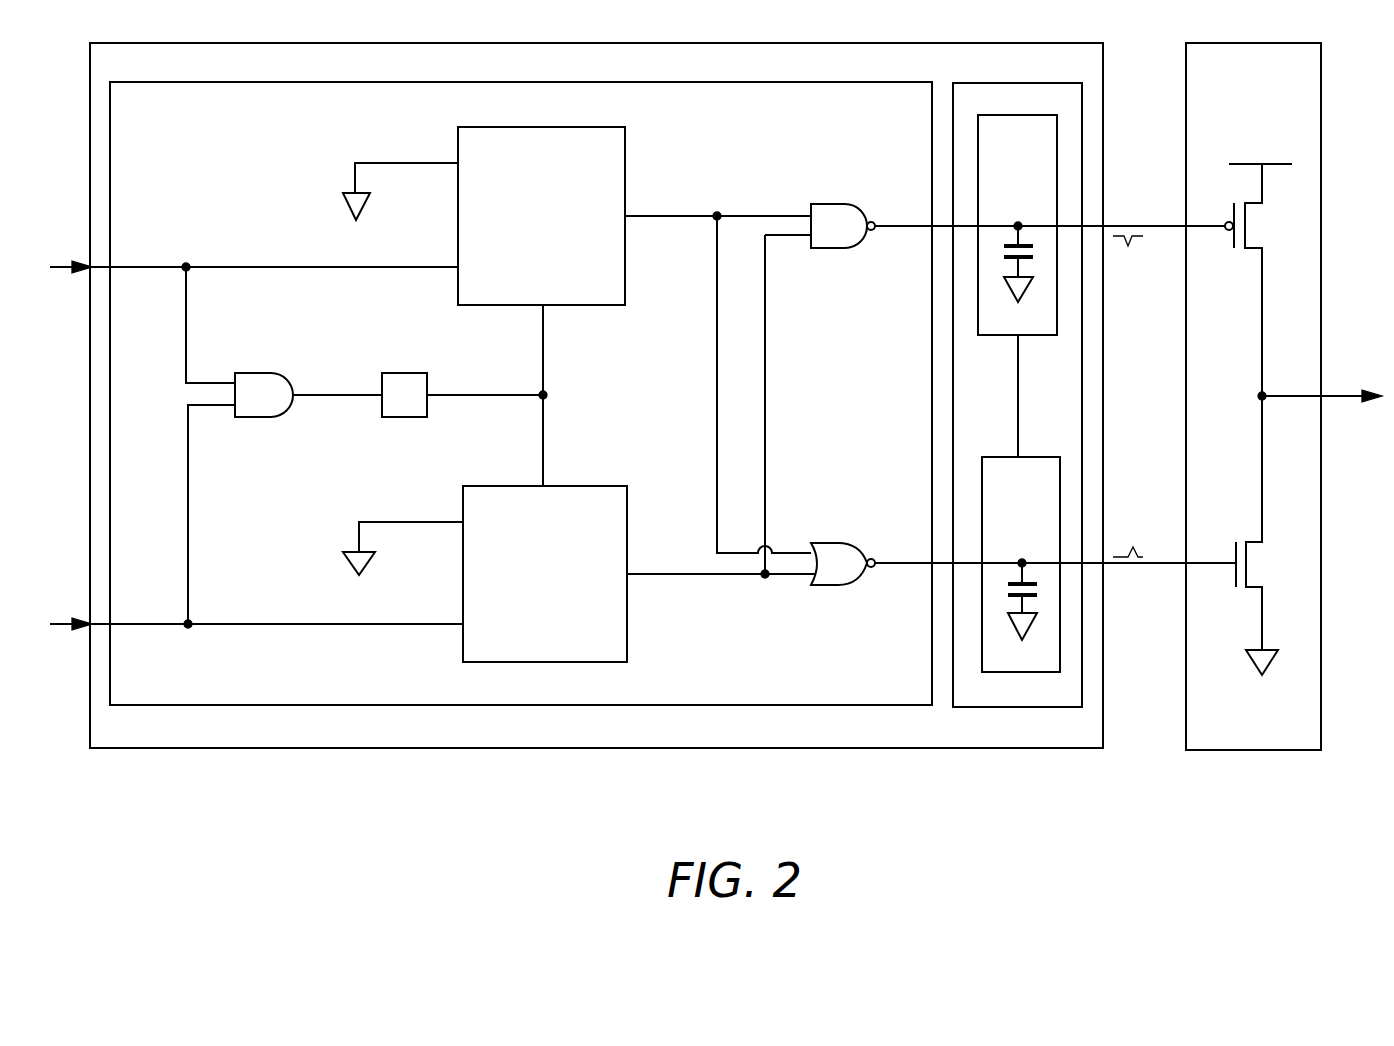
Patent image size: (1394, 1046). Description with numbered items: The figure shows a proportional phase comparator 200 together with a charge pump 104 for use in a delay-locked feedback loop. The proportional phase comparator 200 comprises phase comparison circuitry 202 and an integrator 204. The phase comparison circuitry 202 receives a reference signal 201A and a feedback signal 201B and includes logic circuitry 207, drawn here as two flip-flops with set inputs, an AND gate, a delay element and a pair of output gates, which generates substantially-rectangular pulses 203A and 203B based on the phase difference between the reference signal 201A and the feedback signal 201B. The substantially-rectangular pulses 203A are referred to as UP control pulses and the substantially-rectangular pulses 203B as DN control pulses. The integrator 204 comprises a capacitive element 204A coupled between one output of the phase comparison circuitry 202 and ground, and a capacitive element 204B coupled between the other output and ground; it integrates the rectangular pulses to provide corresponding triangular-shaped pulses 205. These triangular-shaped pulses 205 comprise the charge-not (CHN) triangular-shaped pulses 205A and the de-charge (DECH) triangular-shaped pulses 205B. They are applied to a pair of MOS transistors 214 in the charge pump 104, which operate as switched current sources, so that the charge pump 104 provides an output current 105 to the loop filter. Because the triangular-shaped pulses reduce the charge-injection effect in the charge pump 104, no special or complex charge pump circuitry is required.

The proportional phase comparator 200 is at (400, 750).
The phase comparison circuitry 202 is at (893, 708).
The logic circuitry 207 is at (225, 700).
The reference signal 201A is at (60, 272).
The feedback signal 201B is at (62, 628).
The substantially-rectangular pulses 203A is at (903, 230).
The substantially-rectangular pulses 203B is at (905, 568).
The integrator 204 is at (973, 708).
The capacitive element 204A is at (990, 335).
The capacitive element 204B is at (996, 456).
The triangular-shaped pulses 205 is at (1145, 752).
The triangular-shaped pulses 205A is at (1162, 232).
The triangular-shaped pulses 205B is at (1167, 567).
The charge pump 104 is at (1258, 750).
The MOS transistors 214 is at (1234, 548).
The output current 105 is at (1347, 400).